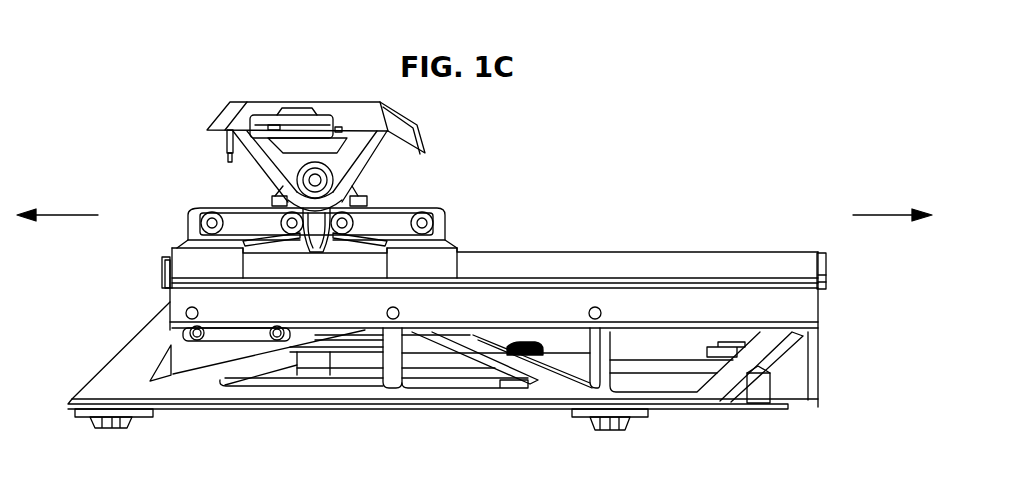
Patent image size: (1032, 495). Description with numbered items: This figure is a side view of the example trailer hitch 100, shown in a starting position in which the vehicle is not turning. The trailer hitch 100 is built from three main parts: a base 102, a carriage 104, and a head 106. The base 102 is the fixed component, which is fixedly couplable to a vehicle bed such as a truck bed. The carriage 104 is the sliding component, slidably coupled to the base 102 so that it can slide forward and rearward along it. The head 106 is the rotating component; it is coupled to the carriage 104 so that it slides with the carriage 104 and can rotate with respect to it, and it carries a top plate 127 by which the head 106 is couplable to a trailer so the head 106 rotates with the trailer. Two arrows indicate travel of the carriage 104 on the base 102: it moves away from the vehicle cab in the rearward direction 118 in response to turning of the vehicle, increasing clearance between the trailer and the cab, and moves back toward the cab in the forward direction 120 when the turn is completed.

The trailer hitch 100 is at (150, 70).
The base 102 is at (575, 252).
The carriage 104 is at (437, 208).
The head 106 is at (428, 135).
The rearward direction 118 is at (887, 215).
The forward direction 120 is at (70, 215).
The top plate 127 is at (322, 103).